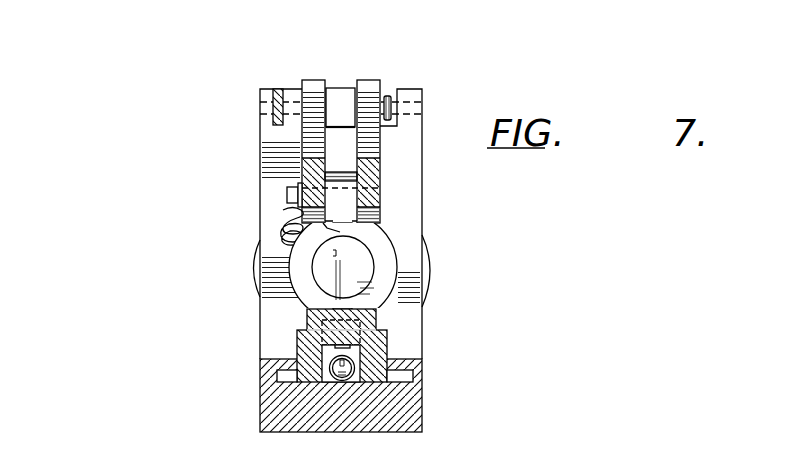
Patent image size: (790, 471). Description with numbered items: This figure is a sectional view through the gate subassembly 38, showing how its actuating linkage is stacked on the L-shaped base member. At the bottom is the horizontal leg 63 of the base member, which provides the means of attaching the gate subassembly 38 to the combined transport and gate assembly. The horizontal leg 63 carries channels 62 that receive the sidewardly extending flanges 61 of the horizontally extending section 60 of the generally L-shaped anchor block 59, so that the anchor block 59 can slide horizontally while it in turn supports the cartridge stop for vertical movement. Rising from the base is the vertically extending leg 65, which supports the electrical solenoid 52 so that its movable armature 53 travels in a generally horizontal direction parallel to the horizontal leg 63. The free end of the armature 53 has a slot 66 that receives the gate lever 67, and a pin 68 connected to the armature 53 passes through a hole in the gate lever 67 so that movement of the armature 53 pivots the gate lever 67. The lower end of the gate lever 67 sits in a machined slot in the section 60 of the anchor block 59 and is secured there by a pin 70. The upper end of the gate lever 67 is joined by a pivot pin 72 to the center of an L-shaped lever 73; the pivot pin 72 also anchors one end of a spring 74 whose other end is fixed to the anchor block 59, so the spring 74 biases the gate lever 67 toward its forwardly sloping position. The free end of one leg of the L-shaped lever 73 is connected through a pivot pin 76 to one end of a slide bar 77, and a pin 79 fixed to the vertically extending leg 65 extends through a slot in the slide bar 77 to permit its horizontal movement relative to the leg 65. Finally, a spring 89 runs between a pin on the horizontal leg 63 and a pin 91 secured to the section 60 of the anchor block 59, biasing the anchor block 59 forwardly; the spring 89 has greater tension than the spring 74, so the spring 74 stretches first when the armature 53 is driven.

The gate subassembly 38 is at (432, 87).
The pin 79 is at (270, 110).
The slide bar 77 is at (343, 97).
The pivot pin 76 is at (333, 102).
The L-shaped lever 73 is at (372, 167).
The vertically extending leg 65 is at (422, 180).
The pivot pin 72 is at (288, 193).
The spring 74 is at (278, 220).
The slot 66 is at (333, 253).
The gate lever 67 is at (340, 284).
The armature 53 is at (363, 252).
The pin 68 is at (363, 270).
The electrical solenoid 52 is at (423, 287).
The pin 70 is at (370, 325).
The horizontally extending section 60 is at (387, 344).
The anchor block 59 is at (298, 334).
The channels 62 is at (278, 375).
The flanges 61 is at (408, 373).
The spring 89 is at (333, 378).
The pin 91 is at (347, 378).
The horizontal leg 63 is at (410, 407).